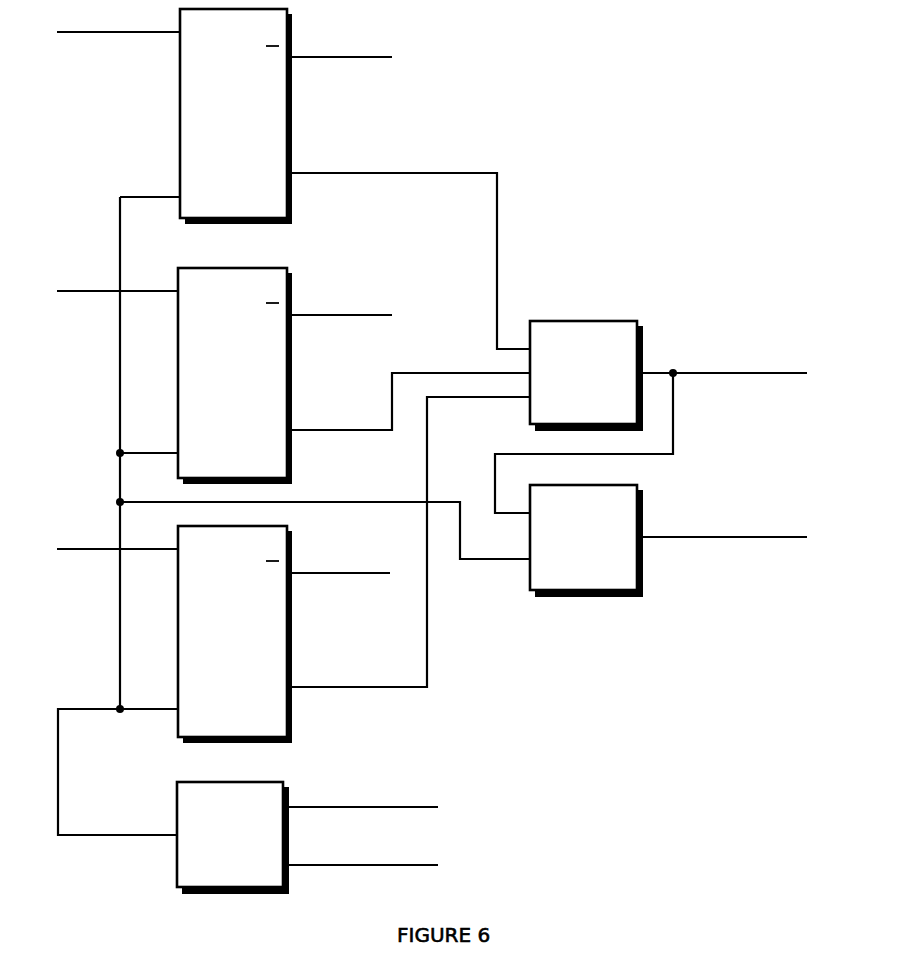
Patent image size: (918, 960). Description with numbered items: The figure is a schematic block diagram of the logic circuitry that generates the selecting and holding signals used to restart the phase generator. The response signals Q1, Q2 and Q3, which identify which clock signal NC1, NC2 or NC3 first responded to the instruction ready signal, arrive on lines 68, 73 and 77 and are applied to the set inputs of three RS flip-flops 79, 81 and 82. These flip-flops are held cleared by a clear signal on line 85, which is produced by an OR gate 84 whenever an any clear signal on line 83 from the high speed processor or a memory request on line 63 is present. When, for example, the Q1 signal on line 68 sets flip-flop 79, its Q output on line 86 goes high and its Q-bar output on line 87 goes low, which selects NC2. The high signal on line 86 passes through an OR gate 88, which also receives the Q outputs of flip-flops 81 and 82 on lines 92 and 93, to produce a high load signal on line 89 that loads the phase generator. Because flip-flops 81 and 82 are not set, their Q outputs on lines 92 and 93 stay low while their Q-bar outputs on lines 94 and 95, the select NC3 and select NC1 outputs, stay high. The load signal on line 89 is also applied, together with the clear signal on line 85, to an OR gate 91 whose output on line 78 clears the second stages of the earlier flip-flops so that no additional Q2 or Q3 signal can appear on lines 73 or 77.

The memory request line 63 is at (350, 867).
The Q1 select signal line 68 is at (80, 34).
The Q2 select signal line 73 is at (82, 293).
The Q3 select signal line 77 is at (84, 552).
The clear signal line 78 is at (764, 537).
The RS flip-flop 79 is at (180, 80).
The RS flip-flop 81 is at (178, 326).
The RS flip-flop 82 is at (178, 585).
The any clear signal line 83 is at (418, 800).
The OR gate 84 is at (175, 862).
The clear signal line 85 is at (347, 499).
The Q output line of flip-flop 79 86 is at (327, 162).
The Q-bar output line of flip-flop 79 87 is at (384, 55).
The OR gate 88 is at (607, 320).
The load signal line 89 is at (784, 370).
The OR gate 91 is at (595, 599).
The Q output line of flip-flop 81 92 is at (337, 418).
The Q output line of flip-flop 82 93 is at (343, 675).
The Q-bar output line of flip-flop 81 94 is at (380, 313).
The Q-bar output line of flip-flop 82 95 is at (384, 571).